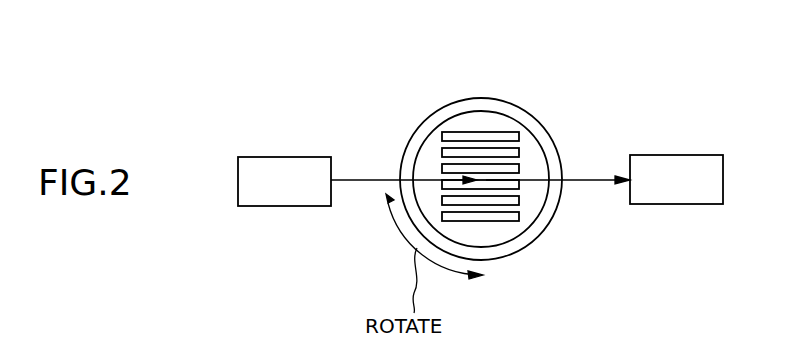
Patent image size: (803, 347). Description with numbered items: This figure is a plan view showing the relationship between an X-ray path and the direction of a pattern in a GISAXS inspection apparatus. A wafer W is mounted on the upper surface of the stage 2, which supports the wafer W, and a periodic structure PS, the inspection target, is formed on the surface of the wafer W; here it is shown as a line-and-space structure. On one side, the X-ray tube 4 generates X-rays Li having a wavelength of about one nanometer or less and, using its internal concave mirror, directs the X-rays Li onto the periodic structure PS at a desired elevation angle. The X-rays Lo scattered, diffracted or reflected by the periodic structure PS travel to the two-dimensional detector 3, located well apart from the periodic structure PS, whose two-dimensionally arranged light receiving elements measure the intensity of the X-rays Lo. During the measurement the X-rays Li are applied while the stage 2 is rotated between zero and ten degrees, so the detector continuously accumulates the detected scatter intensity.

The stage 2 is at (490, 262).
The two-dimensional detector 3 is at (674, 206).
The X-ray tube 4 is at (280, 208).
The wafer W is at (530, 232).
The periodic structure PS is at (490, 136).
The X-rays Li is at (357, 179).
The X-rays Lo is at (592, 179).